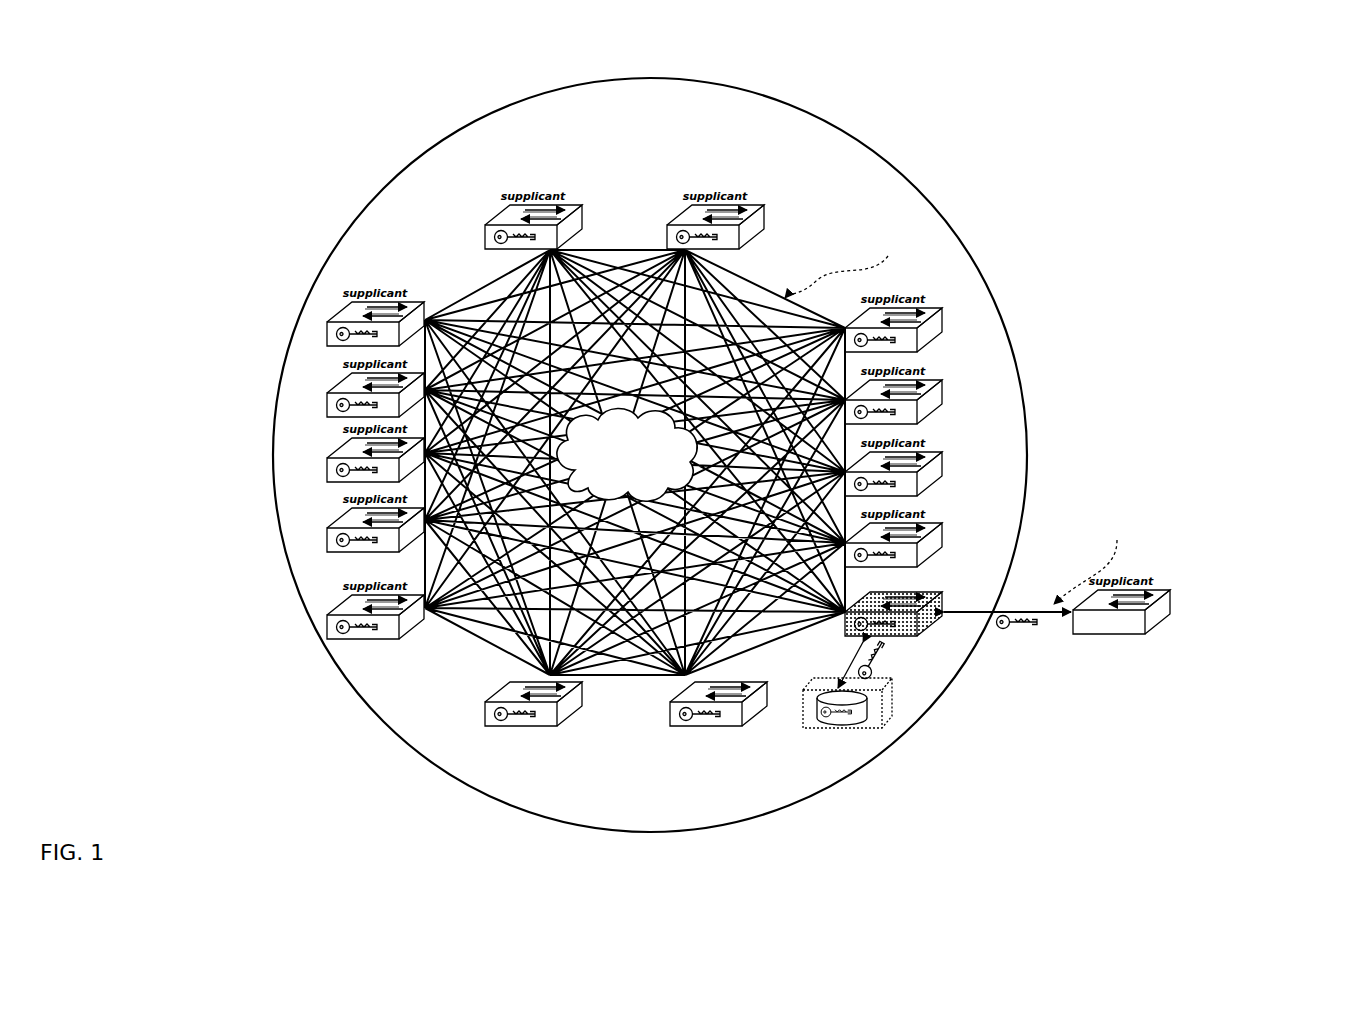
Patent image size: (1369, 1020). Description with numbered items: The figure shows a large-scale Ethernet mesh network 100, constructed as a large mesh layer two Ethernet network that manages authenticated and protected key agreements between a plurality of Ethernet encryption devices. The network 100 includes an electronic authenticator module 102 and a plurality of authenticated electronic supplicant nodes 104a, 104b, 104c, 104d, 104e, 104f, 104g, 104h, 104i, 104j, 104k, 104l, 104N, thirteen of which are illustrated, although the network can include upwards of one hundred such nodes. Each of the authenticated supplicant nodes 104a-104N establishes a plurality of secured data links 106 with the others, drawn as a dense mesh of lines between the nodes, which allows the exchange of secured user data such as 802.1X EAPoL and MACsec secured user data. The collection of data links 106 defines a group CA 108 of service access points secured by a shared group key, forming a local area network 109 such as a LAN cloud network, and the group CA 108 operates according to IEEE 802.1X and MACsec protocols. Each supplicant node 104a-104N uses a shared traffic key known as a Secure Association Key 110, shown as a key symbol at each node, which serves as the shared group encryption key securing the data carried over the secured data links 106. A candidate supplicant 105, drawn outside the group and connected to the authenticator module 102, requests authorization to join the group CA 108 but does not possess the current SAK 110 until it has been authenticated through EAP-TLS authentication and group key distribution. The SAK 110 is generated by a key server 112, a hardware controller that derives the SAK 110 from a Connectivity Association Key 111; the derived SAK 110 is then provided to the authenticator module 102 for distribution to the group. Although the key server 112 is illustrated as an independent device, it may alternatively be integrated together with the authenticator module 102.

The large-scale Ethernet mesh network 100 is at (397, 165).
The electronic authenticator module 102 is at (945, 596).
The authenticated supplicant node 104a is at (767, 212).
The authenticated supplicant node 104b is at (940, 315).
The authenticated supplicant node 104c is at (945, 388).
The authenticated supplicant node 104d is at (945, 458).
The authenticated supplicant node 104e is at (945, 530).
The authenticated supplicant node 104f is at (728, 735).
The authenticated supplicant node 104g is at (482, 728).
The authenticated supplicant node 104h is at (332, 602).
The authenticated supplicant node 104i is at (332, 524).
The authenticated supplicant node 104j is at (332, 452).
The authenticated supplicant node 104k is at (332, 385).
The authenticated supplicant node 104l is at (332, 305).
The authenticated supplicant node 104N is at (500, 215).
The candidate supplicant 105 is at (1170, 612).
The secured data links 106 is at (478, 321).
The group CA 108 is at (603, 248).
The local area network 109 is at (627, 454).
The Secure Association Key 110 is at (500, 237).
The Connectivity Association Key 111 is at (845, 715).
The key server 112 is at (806, 731).